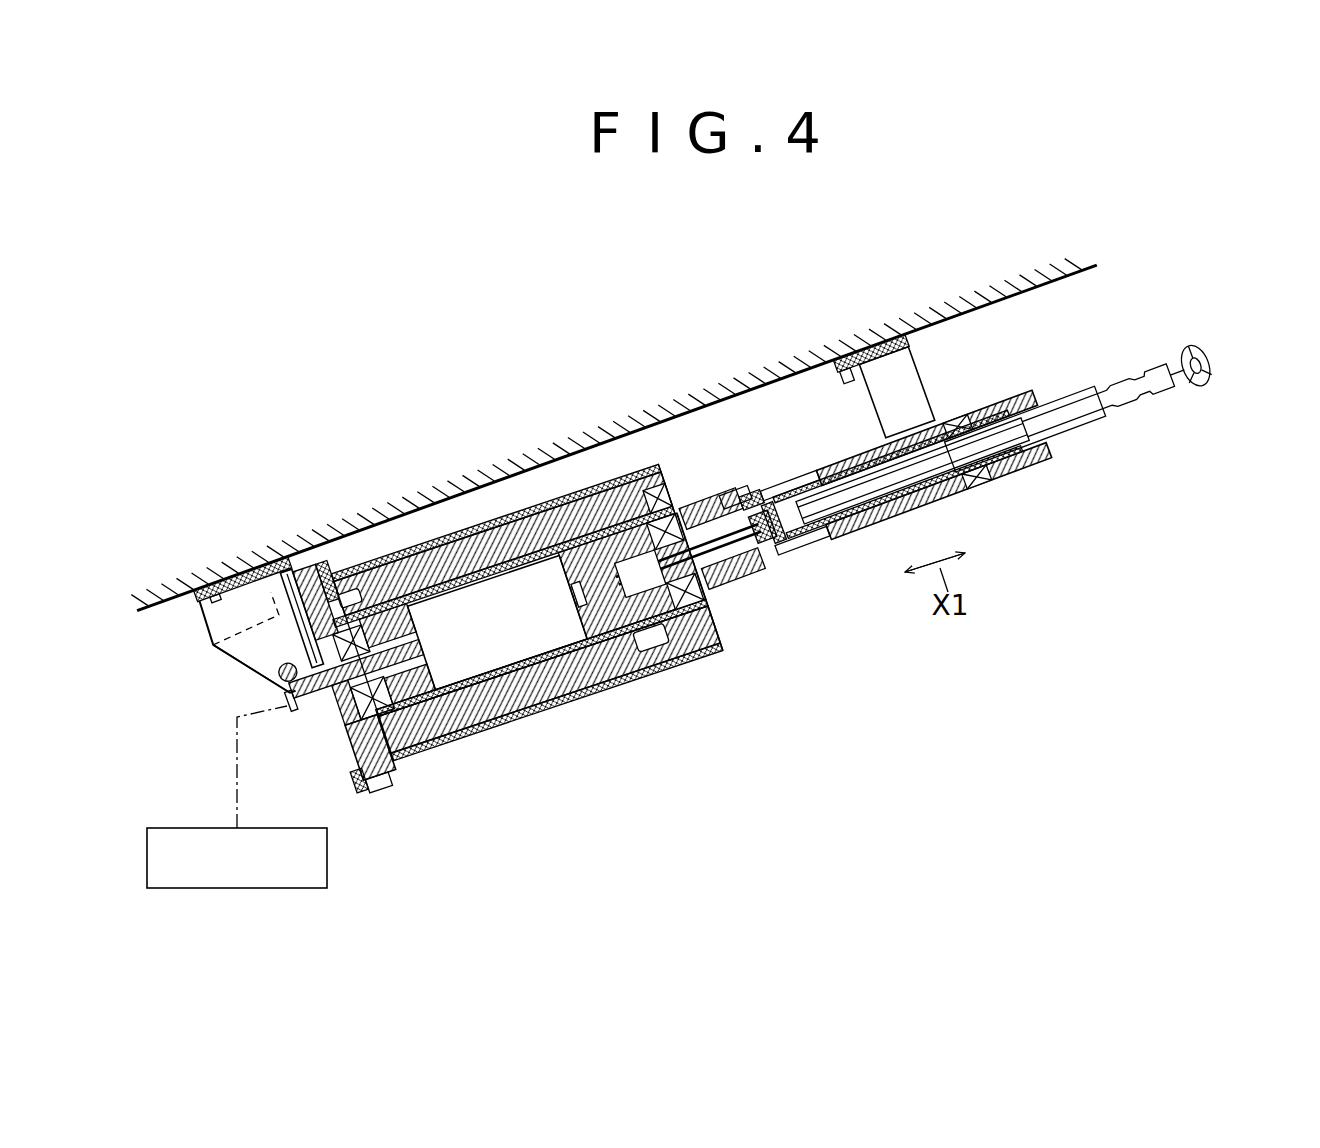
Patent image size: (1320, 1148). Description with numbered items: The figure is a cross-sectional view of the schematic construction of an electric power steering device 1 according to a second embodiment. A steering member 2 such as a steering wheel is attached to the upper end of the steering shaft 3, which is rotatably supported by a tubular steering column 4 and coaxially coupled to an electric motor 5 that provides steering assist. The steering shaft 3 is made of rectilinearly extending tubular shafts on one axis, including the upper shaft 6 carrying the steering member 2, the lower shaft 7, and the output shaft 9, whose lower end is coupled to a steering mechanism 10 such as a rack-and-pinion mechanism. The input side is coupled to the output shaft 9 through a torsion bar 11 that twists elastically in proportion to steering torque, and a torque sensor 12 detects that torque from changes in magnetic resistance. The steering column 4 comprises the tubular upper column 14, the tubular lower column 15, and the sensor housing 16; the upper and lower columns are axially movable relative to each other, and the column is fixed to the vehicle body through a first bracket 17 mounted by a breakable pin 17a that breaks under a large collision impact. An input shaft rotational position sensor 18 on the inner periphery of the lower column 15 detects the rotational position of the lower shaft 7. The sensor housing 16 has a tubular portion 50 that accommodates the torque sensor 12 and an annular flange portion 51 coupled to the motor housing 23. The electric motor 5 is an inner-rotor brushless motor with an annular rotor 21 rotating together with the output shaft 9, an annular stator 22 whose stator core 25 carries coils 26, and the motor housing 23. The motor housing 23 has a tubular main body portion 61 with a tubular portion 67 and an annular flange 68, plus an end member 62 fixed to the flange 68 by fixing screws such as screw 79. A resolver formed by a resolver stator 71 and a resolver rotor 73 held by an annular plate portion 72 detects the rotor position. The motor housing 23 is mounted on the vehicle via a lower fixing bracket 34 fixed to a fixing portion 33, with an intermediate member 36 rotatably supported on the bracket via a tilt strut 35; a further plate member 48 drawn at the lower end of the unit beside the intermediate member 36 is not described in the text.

The electric power steering device 1 is at (1150, 346).
The steering member 2 is at (1192, 348).
The steering shaft 3 is at (1100, 378).
The steering column 4 is at (1046, 471).
The electric motor 5 is at (770, 690).
The upper shaft 6 is at (1088, 428).
The lower shaft 7 is at (736, 590).
The output shaft 9 is at (288, 706).
The steering mechanism 10 is at (328, 860).
The torsion bar 11 is at (772, 546).
The torque sensor 12 is at (734, 494).
The upper column 14 is at (916, 510).
The lower column 15 is at (850, 526).
The sensor housing 16 is at (746, 500).
The first bracket 17 is at (910, 386).
The breakable pin 17a is at (843, 378).
The input shaft rotational position sensor 18 is at (845, 348).
The rotor 21 is at (528, 666).
The stator 22 is at (600, 676).
The motor housing 23 is at (512, 734).
The stator core 25 is at (600, 678).
The coils 26 is at (651, 662).
The fixing portion 33 is at (210, 592).
The lower fixing bracket 34 is at (215, 622).
The tilt strut 35 is at (265, 676).
The intermediate member 36 is at (228, 646).
The tilt plate 48 is at (280, 566).
The tubular portion 50 is at (680, 504).
The flange portion 51 is at (665, 482).
The main body portion 61 is at (478, 738).
The end member 62 is at (352, 749).
The tubular portion 67 is at (466, 760).
The flange 68 is at (388, 794).
The resolver stator 71 is at (690, 658).
The annular plate portion 72 is at (770, 516).
The resolver rotor 73 is at (702, 658).
The fixing screw 79 is at (362, 792).